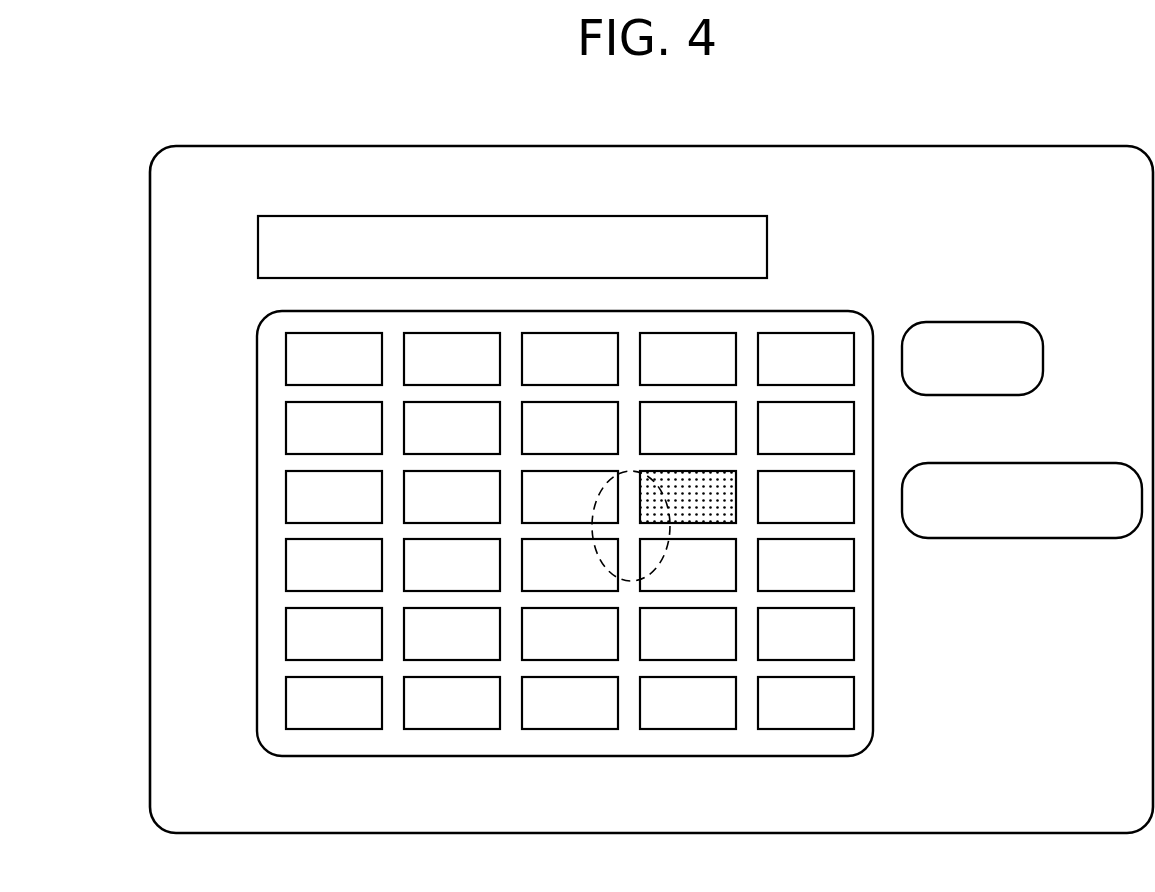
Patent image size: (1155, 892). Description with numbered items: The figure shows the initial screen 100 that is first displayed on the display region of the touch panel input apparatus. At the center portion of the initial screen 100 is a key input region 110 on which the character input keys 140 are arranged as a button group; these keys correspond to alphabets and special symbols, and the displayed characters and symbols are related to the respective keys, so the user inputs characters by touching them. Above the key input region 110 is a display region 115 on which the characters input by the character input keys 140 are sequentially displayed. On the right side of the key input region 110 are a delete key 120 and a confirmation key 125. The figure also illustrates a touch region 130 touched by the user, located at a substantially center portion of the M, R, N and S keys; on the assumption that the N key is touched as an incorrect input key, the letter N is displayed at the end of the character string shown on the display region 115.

The initial screen 100 is at (1037, 146).
The key input region 110 is at (820, 311).
The display region 115 is at (718, 216).
The delete key 120 is at (1002, 322).
The confirmation key 125 is at (1062, 463).
The touch region 130 is at (629, 596).
The character input keys 140 is at (256, 366).